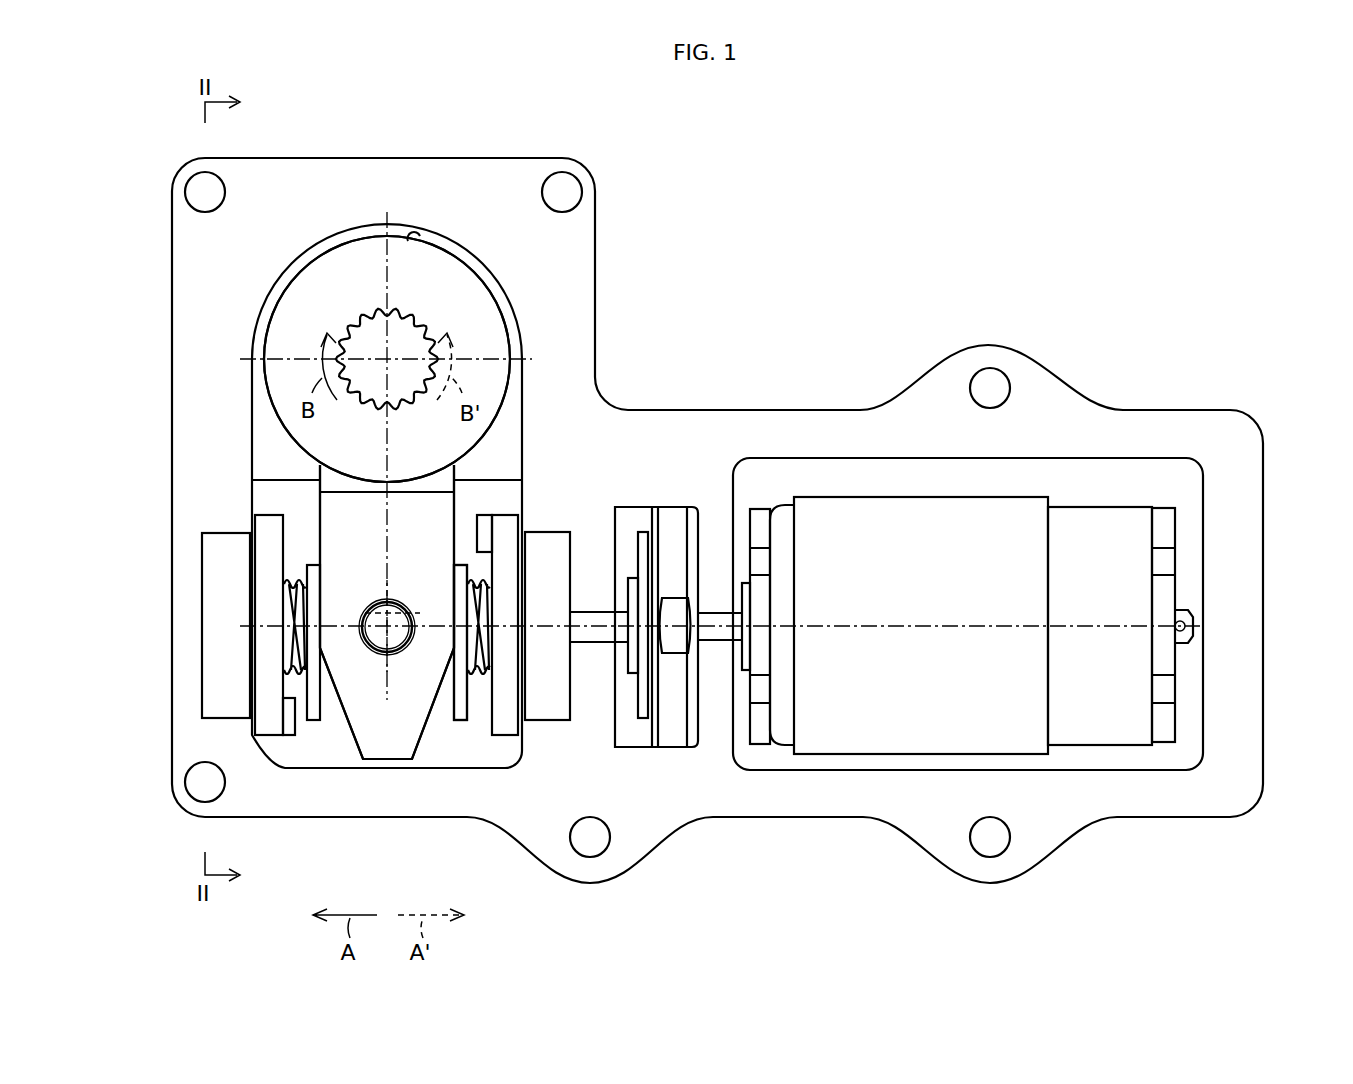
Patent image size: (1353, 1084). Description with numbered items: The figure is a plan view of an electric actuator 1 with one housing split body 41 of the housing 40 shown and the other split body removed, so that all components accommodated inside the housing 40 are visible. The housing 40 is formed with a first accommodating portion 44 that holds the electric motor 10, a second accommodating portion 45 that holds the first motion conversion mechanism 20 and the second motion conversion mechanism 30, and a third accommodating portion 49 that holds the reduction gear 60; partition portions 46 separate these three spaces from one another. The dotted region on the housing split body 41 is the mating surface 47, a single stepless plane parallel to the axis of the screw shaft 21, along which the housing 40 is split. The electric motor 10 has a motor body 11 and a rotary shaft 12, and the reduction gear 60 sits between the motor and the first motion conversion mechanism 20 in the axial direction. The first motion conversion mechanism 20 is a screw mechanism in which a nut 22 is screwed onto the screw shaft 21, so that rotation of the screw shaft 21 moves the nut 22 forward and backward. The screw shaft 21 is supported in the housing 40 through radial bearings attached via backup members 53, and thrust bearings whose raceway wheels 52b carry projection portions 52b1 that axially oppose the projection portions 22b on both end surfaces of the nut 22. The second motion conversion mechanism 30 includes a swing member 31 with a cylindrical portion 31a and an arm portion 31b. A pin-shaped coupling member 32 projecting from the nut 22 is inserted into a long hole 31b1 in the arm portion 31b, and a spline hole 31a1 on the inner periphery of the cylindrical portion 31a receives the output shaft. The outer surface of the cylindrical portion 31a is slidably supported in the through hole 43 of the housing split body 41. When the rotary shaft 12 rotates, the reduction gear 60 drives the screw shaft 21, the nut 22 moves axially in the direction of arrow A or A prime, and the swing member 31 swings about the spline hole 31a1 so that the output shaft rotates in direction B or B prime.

The electric actuator 1 is at (899, 238).
The electric motor 10 is at (993, 617).
The motor body 11 is at (860, 722).
The rotary shaft 12 is at (712, 634).
The first motion conversion mechanism 20 is at (340, 744).
The screw shaft 21 is at (470, 722).
The nut 22 is at (437, 722).
The projection portions 22b is at (300, 680).
The second motion conversion mechanism 30 is at (306, 504).
The swing member 31 is at (373, 434).
The cylindrical portion 31a is at (310, 312).
The spline hole 31a1 is at (364, 330).
The arm portion 31b is at (352, 553).
The long hole 31b1 is at (367, 655).
The coupling member 32 is at (365, 613).
The housing 40 is at (1030, 352).
The housing split body 41 is at (1022, 559).
The through hole 43 is at (427, 240).
The first accommodating portion 44 is at (1177, 488).
The second accommodating portion 45 is at (263, 430).
The partition portions 46 is at (713, 540).
The mating surface 47 is at (770, 797).
The third accommodating portion 49 is at (626, 748).
The raceway wheel 52b is at (263, 723).
The projection portions 52b1 is at (290, 735).
The backup member 53 is at (220, 650).
The reduction gear 60 is at (647, 745).